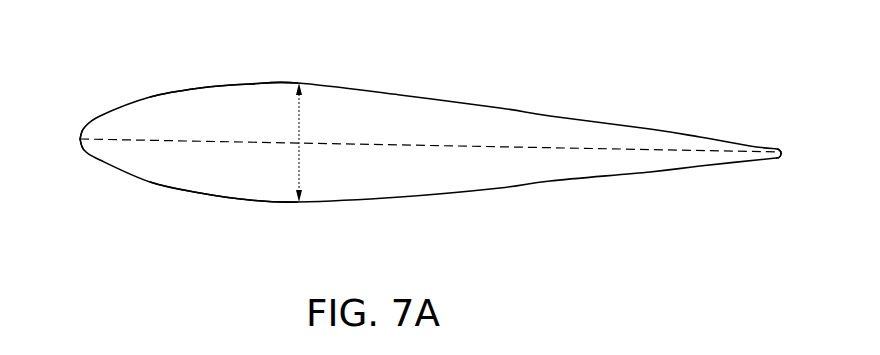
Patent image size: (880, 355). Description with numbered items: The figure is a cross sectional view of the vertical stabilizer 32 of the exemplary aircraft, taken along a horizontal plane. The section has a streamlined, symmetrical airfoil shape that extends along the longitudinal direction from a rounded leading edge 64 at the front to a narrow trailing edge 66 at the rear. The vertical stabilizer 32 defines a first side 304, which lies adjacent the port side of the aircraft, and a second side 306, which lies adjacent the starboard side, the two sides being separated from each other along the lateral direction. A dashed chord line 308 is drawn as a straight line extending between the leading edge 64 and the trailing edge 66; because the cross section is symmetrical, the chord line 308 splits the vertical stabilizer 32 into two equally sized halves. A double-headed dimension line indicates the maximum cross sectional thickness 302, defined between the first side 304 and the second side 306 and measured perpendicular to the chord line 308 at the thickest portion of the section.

The vertical stabilizer 32 is at (138, 42).
The second side 306 is at (223, 75).
The first side 304 is at (202, 207).
The leading edge 64 is at (58, 139).
The trailing edge 66 is at (800, 154).
The chord line 308 is at (495, 146).
The maximum cross sectional thickness 302 is at (300, 120).